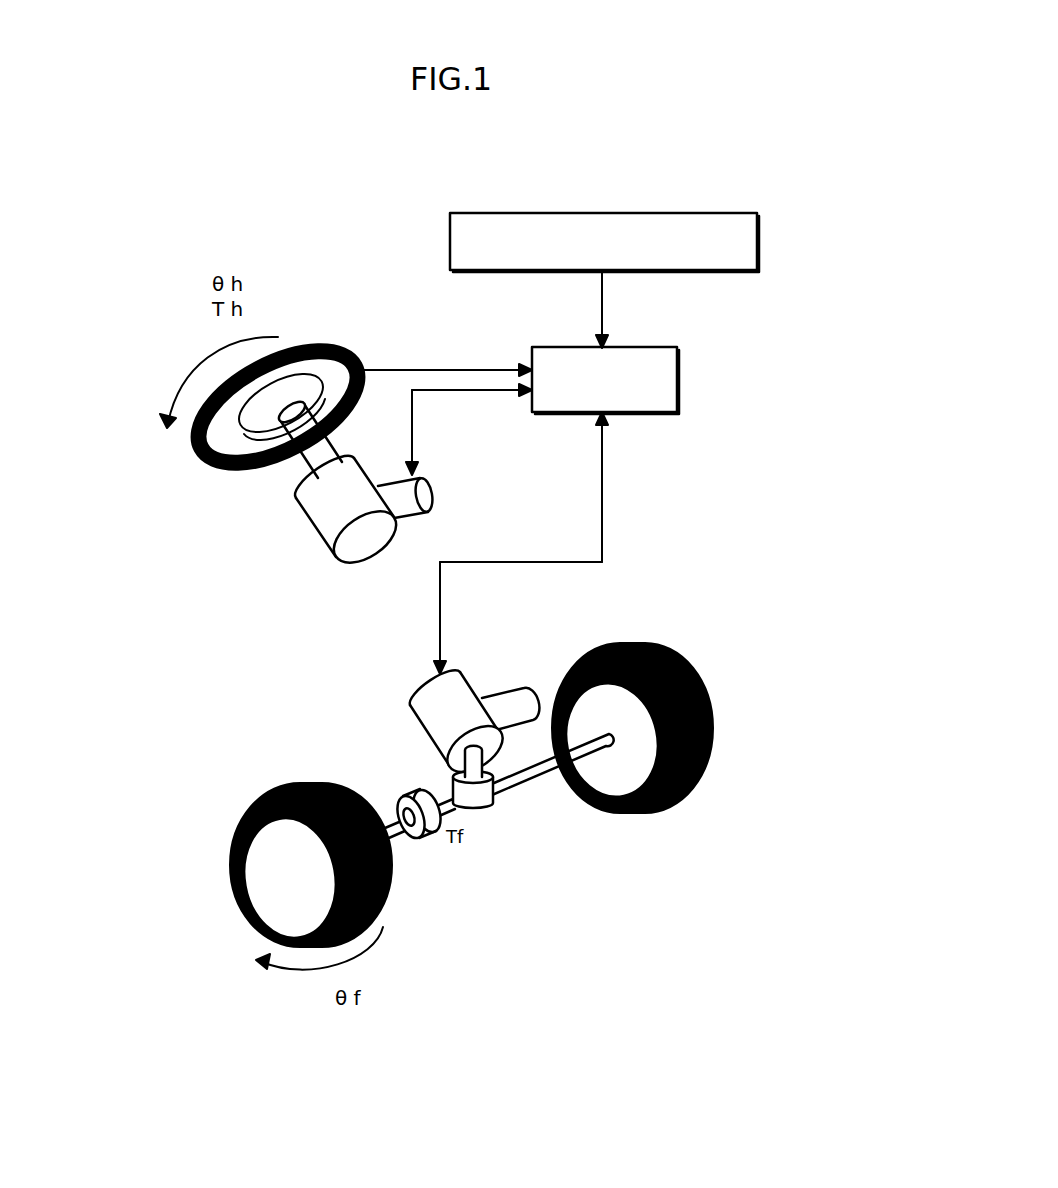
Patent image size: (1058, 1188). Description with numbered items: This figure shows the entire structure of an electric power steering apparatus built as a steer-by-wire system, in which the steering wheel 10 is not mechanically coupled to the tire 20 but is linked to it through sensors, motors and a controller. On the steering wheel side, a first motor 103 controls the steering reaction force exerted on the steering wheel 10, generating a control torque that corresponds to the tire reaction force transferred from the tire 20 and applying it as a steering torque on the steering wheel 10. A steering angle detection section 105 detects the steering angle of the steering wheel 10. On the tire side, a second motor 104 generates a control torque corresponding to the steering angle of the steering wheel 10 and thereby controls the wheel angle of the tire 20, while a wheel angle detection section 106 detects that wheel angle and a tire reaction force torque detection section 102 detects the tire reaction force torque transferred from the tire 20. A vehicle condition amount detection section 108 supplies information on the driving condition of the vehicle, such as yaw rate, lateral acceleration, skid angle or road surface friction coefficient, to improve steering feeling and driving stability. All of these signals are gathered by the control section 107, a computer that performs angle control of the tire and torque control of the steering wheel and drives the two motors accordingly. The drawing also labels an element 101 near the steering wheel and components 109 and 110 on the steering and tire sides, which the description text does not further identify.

The steering wheel 10 is at (312, 345).
The tire 20 is at (392, 877).
The steering angle sensor 101 is at (260, 437).
The tire reaction force torque detection section 102 is at (480, 808).
The first motor 103 is at (432, 500).
The second motor 104 is at (510, 700).
The steering angle detection section 105 is at (245, 403).
The wheel angle detection section 106 is at (403, 803).
The control section 107 is at (677, 392).
The vehicle condition amount detection section 108 is at (757, 248).
The reaction motor 109 is at (330, 522).
The steering motor 110 is at (432, 707).